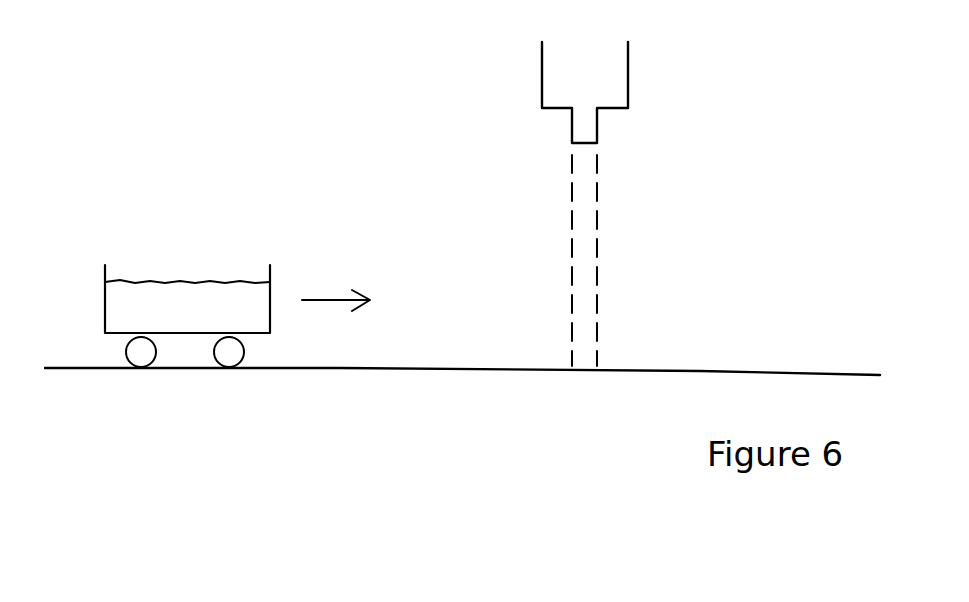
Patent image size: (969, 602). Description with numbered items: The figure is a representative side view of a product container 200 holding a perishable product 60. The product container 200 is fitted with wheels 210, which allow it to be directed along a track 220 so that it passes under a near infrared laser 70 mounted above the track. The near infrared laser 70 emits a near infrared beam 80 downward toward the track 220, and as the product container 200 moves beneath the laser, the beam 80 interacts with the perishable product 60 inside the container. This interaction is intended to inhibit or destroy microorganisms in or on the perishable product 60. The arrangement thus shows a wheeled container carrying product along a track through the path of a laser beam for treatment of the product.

The perishable product 60 is at (130, 290).
The near infrared laser 70 is at (614, 82).
The near infrared beam 80 is at (584, 221).
The product container 200 is at (250, 260).
The wheels 210 is at (142, 352).
The track 220 is at (305, 372).